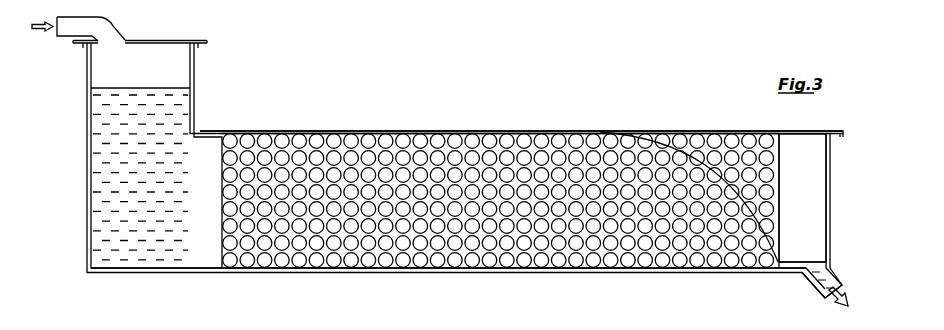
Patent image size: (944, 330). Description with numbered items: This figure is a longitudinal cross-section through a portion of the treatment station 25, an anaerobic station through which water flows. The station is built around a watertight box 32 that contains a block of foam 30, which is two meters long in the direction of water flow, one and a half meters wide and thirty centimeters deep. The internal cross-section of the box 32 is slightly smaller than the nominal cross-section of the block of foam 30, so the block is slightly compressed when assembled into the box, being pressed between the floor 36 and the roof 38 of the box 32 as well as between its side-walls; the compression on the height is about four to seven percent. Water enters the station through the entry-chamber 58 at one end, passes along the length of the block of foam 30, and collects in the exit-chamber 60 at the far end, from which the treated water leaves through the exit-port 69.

The treatment station 25 is at (652, 122).
The block of foam 30 is at (530, 210).
The watertight box 32 is at (84, 253).
The floor of box 36 is at (300, 273).
The roof of box 38 is at (415, 130).
The entry-chamber 58 is at (136, 78).
The exit-chamber 60 is at (812, 208).
The exit-port 69 is at (812, 282).